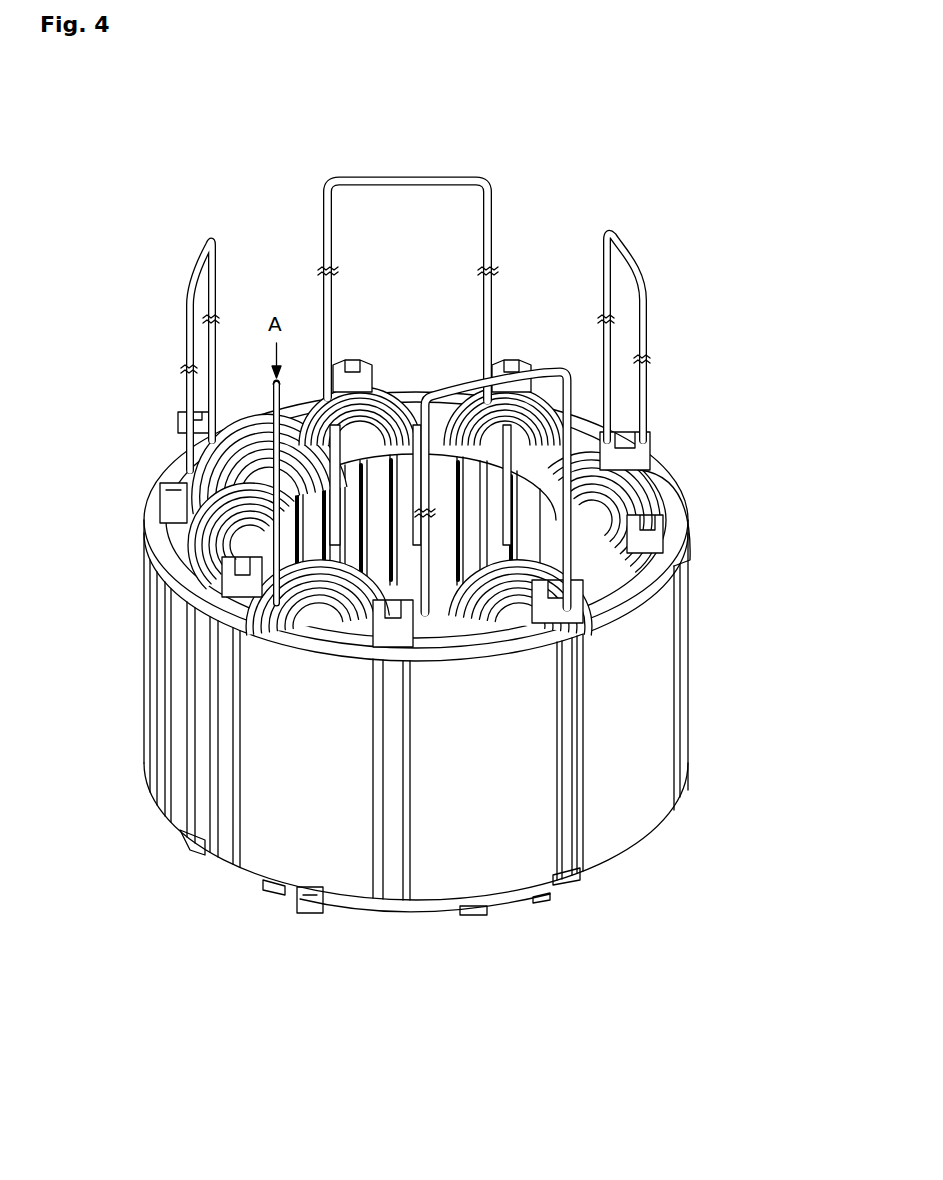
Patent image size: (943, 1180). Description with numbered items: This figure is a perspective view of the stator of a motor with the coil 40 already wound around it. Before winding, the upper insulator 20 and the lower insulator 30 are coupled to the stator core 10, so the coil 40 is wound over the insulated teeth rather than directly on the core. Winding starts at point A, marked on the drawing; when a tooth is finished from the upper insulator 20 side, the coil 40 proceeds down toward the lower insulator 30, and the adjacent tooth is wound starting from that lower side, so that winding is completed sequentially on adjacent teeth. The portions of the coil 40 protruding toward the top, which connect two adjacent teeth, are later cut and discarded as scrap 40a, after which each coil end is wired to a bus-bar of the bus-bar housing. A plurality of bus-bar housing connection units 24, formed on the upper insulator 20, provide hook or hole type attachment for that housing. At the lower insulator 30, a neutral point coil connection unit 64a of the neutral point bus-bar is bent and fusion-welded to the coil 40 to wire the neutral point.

The stator core 10 is at (688, 667).
The upper insulator 20 is at (658, 497).
The bus-bar housing connection unit 24 is at (660, 531).
The lower insulator 30 is at (567, 878).
The coil 40 is at (320, 306).
The scrap 40a is at (400, 178).
The neutral point coil connection unit 64a is at (303, 914).